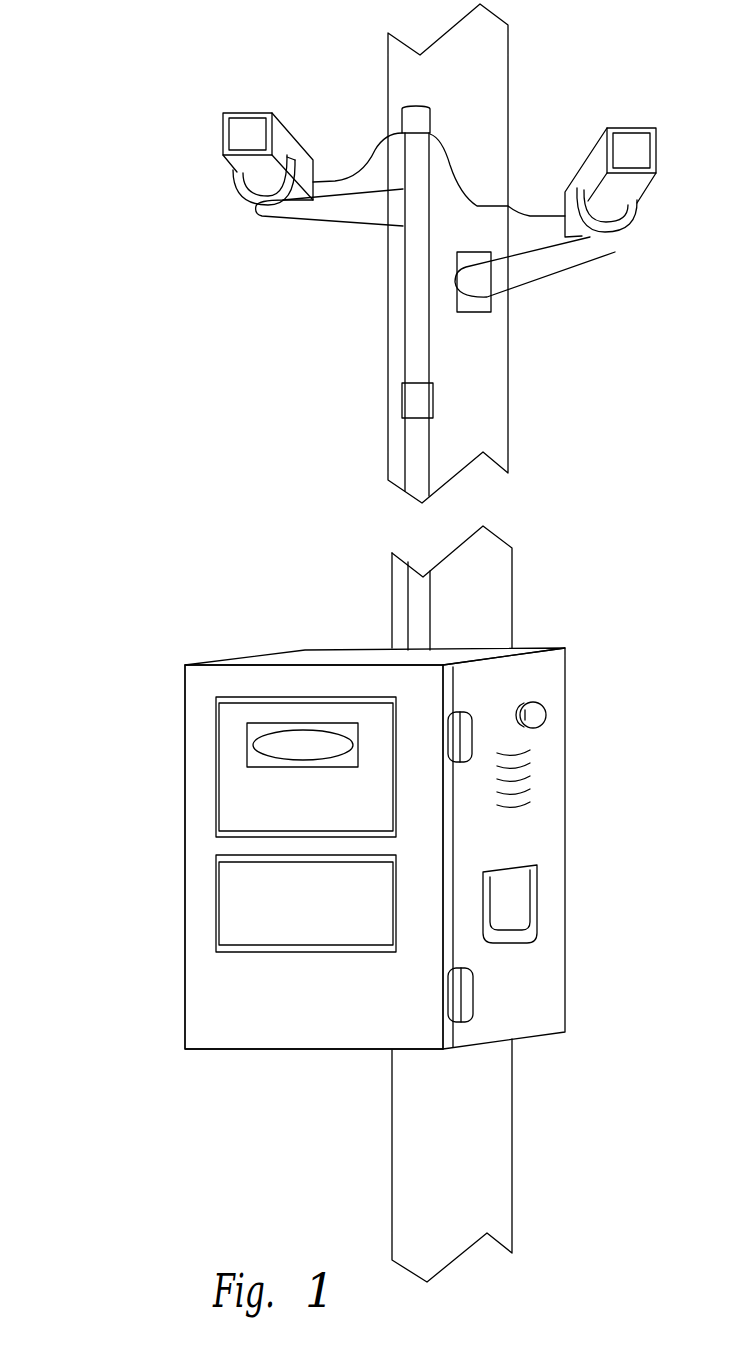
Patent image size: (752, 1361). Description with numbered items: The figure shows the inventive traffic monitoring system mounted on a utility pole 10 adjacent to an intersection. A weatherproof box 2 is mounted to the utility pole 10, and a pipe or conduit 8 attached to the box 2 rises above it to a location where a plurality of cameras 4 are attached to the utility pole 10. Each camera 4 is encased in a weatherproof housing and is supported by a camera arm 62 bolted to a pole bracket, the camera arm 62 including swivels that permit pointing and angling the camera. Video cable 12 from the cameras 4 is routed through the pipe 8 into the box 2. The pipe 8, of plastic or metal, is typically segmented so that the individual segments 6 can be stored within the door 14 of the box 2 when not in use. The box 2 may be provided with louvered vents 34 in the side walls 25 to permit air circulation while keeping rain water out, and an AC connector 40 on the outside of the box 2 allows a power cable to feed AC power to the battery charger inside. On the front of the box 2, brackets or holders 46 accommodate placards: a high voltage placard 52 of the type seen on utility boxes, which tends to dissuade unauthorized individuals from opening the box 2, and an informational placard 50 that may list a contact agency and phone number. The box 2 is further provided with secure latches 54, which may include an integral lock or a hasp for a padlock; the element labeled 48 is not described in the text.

The weatherproof box 2 is at (162, 608).
The cameras 4 is at (248, 113).
The pipe segments 6 is at (418, 320).
The pipe or conduit 8 is at (421, 448).
The utility pole 10 is at (495, 410).
The video cable 12 is at (352, 168).
The door 14 is at (243, 1050).
The side walls 25 is at (552, 1000).
The louvered vents 34 is at (513, 787).
The AC connector 40 is at (537, 713).
The brackets or holders 46 is at (238, 835).
The enclosure door 48 is at (198, 702).
The informational placard 50 is at (230, 898).
The high voltage placard 52 is at (232, 768).
The secure latches 54 is at (470, 722).
The camera arm 62 is at (547, 272).